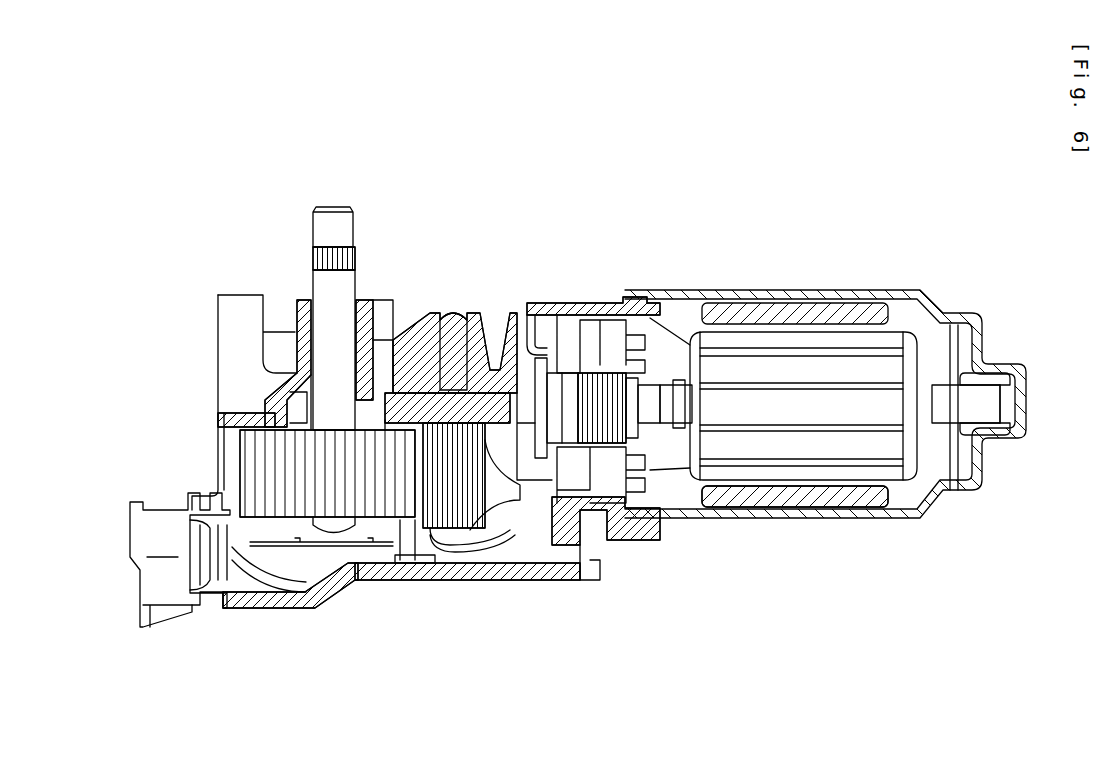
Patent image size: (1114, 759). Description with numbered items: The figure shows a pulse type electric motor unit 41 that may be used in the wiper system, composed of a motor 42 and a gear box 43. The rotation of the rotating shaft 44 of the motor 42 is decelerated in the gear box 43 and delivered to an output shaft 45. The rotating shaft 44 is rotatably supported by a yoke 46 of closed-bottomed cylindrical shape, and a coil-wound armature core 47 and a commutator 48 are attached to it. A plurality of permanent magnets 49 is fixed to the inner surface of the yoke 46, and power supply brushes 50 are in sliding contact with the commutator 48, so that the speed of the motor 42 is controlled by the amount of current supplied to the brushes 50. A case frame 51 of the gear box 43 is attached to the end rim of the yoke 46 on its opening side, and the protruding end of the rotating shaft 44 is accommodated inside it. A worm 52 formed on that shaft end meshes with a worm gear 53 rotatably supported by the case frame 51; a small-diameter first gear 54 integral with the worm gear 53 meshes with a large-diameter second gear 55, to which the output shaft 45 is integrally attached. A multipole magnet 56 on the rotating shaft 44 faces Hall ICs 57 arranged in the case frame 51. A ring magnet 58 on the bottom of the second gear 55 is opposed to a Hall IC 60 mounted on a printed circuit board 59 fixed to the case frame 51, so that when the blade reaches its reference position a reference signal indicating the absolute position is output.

The electric motor unit 41 is at (667, 252).
The motor 42 is at (825, 290).
The gear box 43 is at (435, 315).
The rotating shaft 44 is at (947, 408).
The output shaft 45 is at (332, 285).
The yoke 46 is at (727, 291).
The coil-wound armature core 47 is at (830, 440).
The commutator 48 is at (667, 440).
The permanent magnets 49 is at (780, 500).
The power supply brushes 50 is at (600, 370).
The case frame 51 is at (533, 305).
The worm 52 is at (385, 400).
The worm gear 53 is at (445, 400).
The first gear 54 is at (458, 520).
The second gear 55 is at (283, 467).
The multipole magnet 56 is at (556, 373).
The Hall ICs 57 is at (572, 567).
The ring magnet 58 is at (385, 535).
The printed circuit board 59 is at (348, 555).
The Hall IC 60 is at (403, 537).